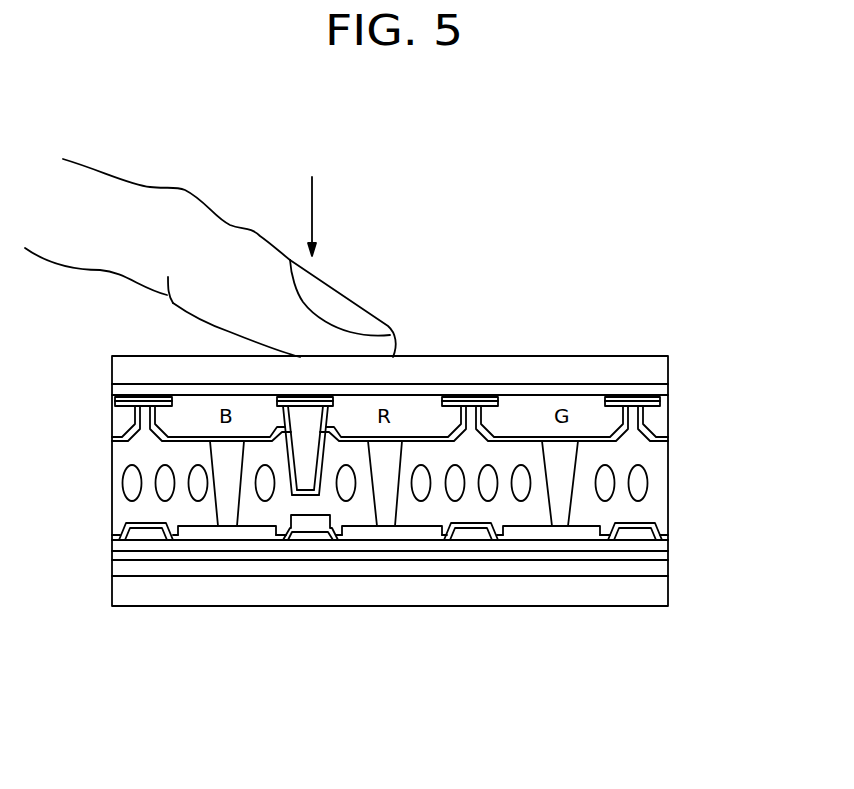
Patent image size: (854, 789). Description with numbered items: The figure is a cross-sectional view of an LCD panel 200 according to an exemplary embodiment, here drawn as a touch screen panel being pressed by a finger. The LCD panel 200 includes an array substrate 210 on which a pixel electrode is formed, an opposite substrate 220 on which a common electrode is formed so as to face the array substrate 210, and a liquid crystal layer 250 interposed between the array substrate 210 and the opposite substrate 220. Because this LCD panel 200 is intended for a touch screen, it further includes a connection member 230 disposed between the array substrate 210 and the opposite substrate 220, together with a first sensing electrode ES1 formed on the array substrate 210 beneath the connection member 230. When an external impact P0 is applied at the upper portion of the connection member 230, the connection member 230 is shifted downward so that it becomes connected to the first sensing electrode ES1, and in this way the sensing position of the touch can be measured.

The LCD panel 200 is at (422, 150).
The array substrate 210 is at (658, 587).
The opposite substrate 220 is at (657, 370).
The connection member 230 is at (310, 458).
The liquid crystal layer 250 is at (658, 512).
The first sensing electrode ES1 is at (308, 520).
The external impact P0 is at (310, 201).